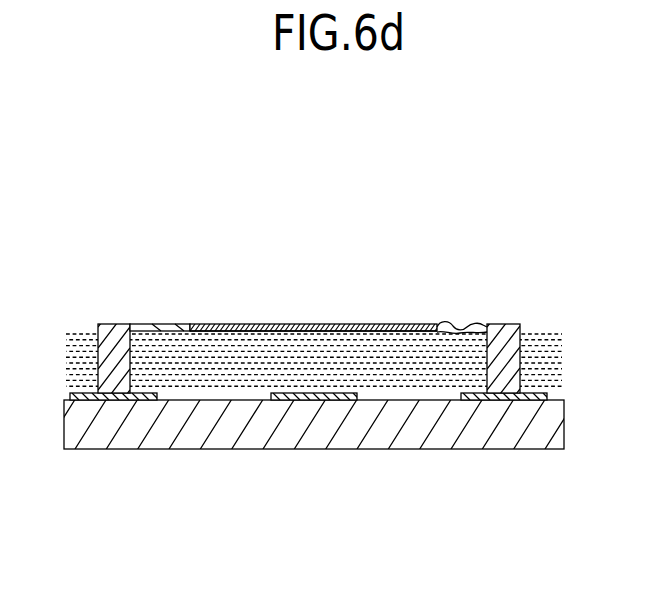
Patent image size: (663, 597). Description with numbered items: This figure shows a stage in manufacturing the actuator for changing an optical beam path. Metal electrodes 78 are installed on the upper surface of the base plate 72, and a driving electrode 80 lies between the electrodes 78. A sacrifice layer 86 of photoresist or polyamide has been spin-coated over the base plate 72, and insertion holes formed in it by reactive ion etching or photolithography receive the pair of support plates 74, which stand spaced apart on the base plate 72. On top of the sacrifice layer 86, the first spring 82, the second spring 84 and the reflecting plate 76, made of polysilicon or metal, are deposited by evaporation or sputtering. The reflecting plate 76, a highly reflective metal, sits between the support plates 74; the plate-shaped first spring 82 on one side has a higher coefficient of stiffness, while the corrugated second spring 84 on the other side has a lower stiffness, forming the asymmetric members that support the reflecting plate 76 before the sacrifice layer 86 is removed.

The base plate 72 is at (380, 443).
The support plates 74 is at (107, 324).
The reflecting plate 76 is at (378, 325).
The electrodes 78 is at (121, 397).
The driving electrode 80 is at (310, 399).
The first spring 82 is at (168, 325).
The second spring 84 is at (470, 325).
The sacrifice layer 86 is at (273, 347).